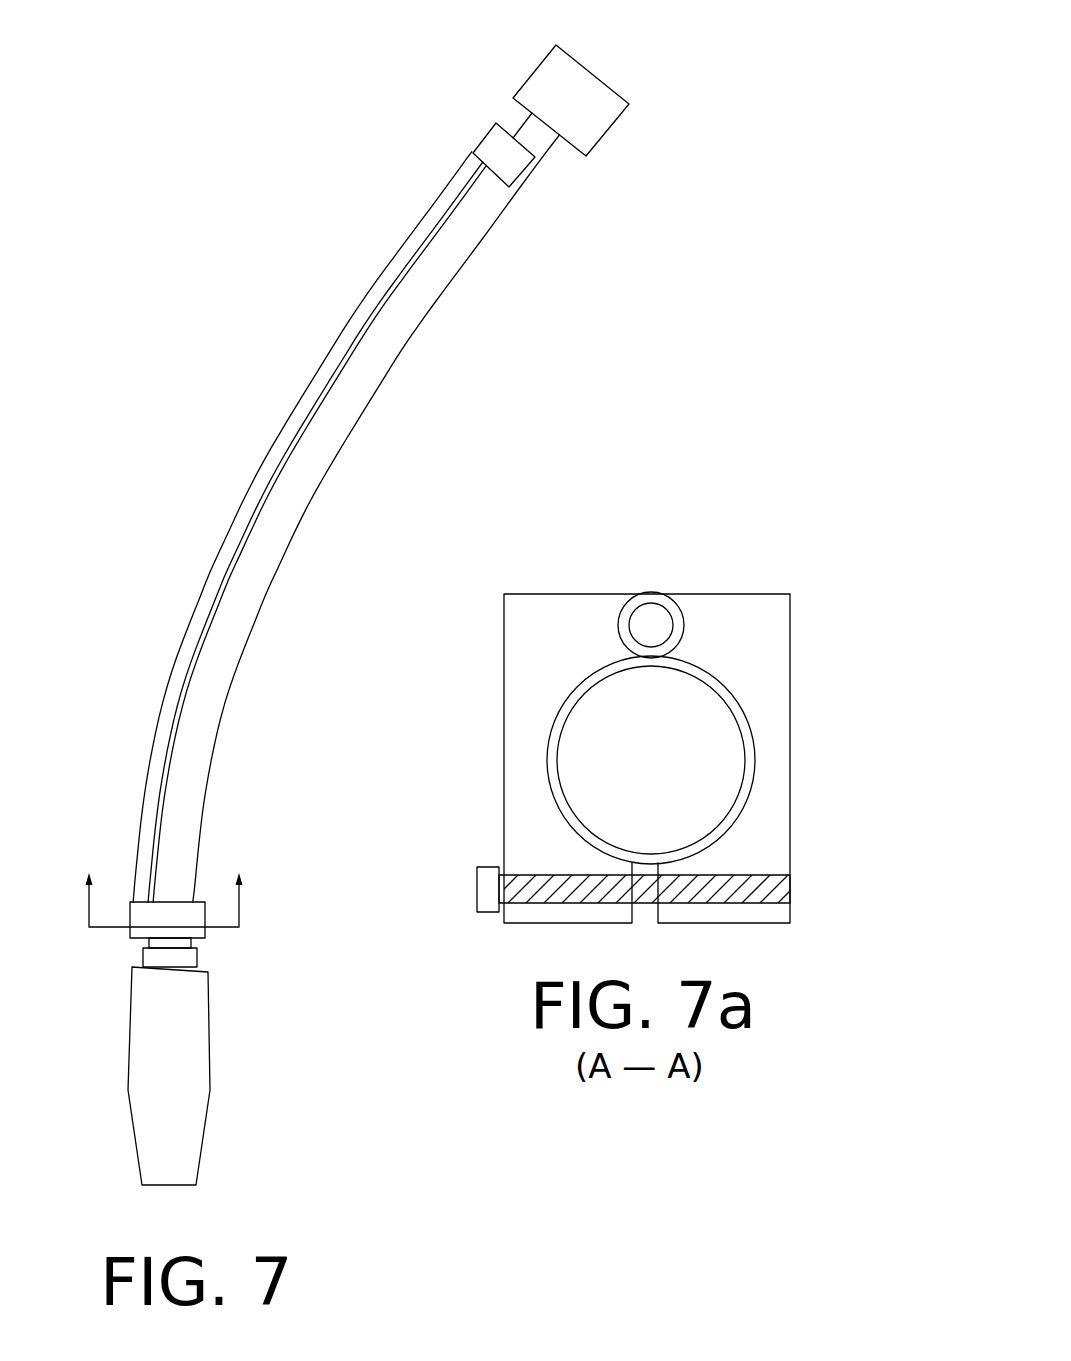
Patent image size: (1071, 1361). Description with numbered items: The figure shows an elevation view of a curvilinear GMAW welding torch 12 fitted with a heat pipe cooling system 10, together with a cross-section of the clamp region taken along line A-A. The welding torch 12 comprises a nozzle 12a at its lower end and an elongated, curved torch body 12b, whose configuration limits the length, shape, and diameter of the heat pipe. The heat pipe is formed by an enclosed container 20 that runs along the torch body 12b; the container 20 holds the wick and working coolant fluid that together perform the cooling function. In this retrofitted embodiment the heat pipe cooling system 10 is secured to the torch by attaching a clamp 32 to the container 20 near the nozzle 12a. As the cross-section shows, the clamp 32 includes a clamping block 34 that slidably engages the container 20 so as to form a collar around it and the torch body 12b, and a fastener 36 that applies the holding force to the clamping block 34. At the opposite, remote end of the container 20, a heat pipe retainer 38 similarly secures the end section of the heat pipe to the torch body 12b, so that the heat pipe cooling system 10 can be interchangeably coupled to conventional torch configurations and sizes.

In FIG. 7, the heat pipe cooling system 10 is at (146, 262).
In FIG. 7, the welding torch 12 is at (376, 495).
In FIG. 7A, the welding torch 12 is at (755, 767).
In FIG. 7, the nozzle 12a is at (140, 1073).
In FIG. 7, the torch body 12b is at (548, 163).
In FIG. 7, the enclosed container 20 is at (355, 308).
In FIG. 7A, the enclosed container 20 is at (683, 623).
In FIG. 7, the clamp 32 is at (130, 939).
In FIG. 7A, the clamping block 34 is at (518, 815).
In FIG. 7A, the fastener 36 is at (488, 912).
In FIG. 7, the heat pipe retainer 38 is at (494, 124).